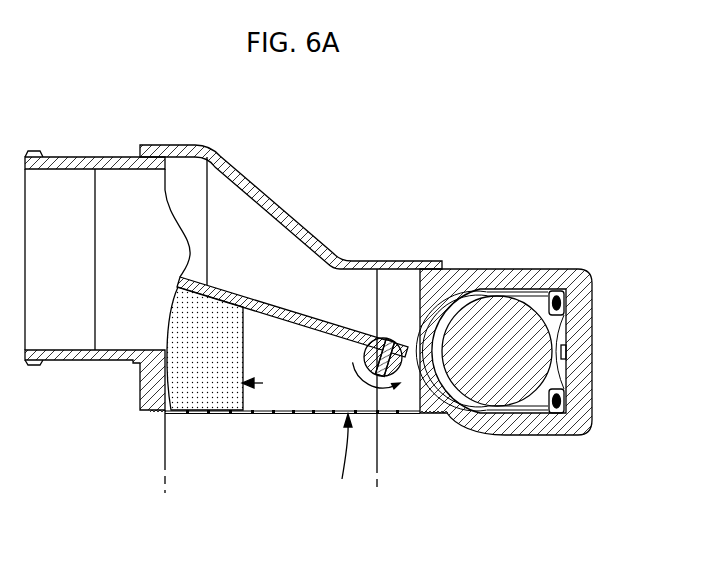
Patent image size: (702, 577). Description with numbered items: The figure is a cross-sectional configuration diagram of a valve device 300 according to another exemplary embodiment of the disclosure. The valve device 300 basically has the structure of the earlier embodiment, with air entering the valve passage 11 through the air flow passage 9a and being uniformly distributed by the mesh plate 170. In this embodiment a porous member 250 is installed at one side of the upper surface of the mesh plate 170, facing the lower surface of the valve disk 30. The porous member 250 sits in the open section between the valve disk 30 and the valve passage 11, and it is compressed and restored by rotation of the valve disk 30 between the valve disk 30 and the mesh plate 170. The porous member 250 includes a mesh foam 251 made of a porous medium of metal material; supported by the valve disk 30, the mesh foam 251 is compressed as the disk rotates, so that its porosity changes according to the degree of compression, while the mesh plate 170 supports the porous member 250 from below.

The valve device 300 is at (281, 126).
The valve disk 30 is at (321, 316).
The air flow passage 9a is at (165, 442).
The mesh foam 251 is at (203, 397).
The porous member 250 is at (262, 386).
The valve passage 11 is at (310, 391).
The mesh plate 170 is at (350, 457).